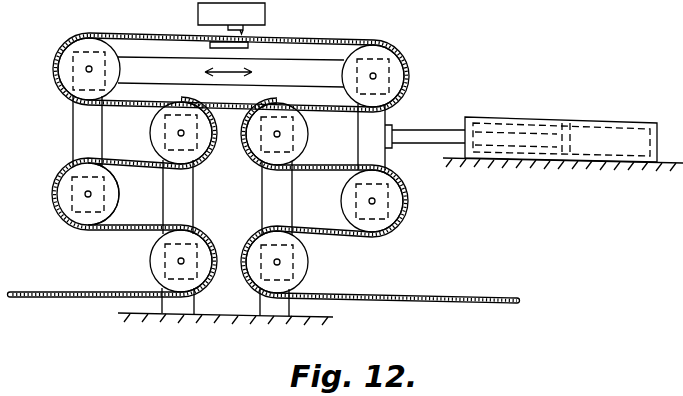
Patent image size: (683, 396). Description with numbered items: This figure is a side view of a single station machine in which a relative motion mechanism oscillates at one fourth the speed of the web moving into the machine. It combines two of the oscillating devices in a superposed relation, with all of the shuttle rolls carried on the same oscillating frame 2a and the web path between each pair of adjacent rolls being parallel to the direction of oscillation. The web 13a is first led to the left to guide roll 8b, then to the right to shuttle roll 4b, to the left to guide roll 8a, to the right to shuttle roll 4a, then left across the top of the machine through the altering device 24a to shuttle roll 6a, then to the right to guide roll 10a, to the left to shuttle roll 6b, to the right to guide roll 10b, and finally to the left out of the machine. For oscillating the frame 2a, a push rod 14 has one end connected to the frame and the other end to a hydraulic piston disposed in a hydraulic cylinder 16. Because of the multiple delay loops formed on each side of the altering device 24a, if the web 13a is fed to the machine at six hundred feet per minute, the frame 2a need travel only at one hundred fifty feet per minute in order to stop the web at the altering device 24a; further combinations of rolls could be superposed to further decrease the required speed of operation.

The frame 2a is at (318, 67).
The shuttle roll 4a is at (395, 73).
The shuttle roll 6a is at (60, 76).
The guide roll 8a is at (302, 143).
The guide roll 10a is at (152, 139).
The shuttle roll 4b is at (393, 207).
The shuttle roll 6b is at (57, 187).
The guide roll 8b is at (300, 273).
The guide roll 10b is at (150, 262).
The web 13a is at (451, 280).
The push rod 14 is at (438, 138).
The hydraulic cylinder 16 is at (550, 118).
The altering device 24a is at (265, 15).